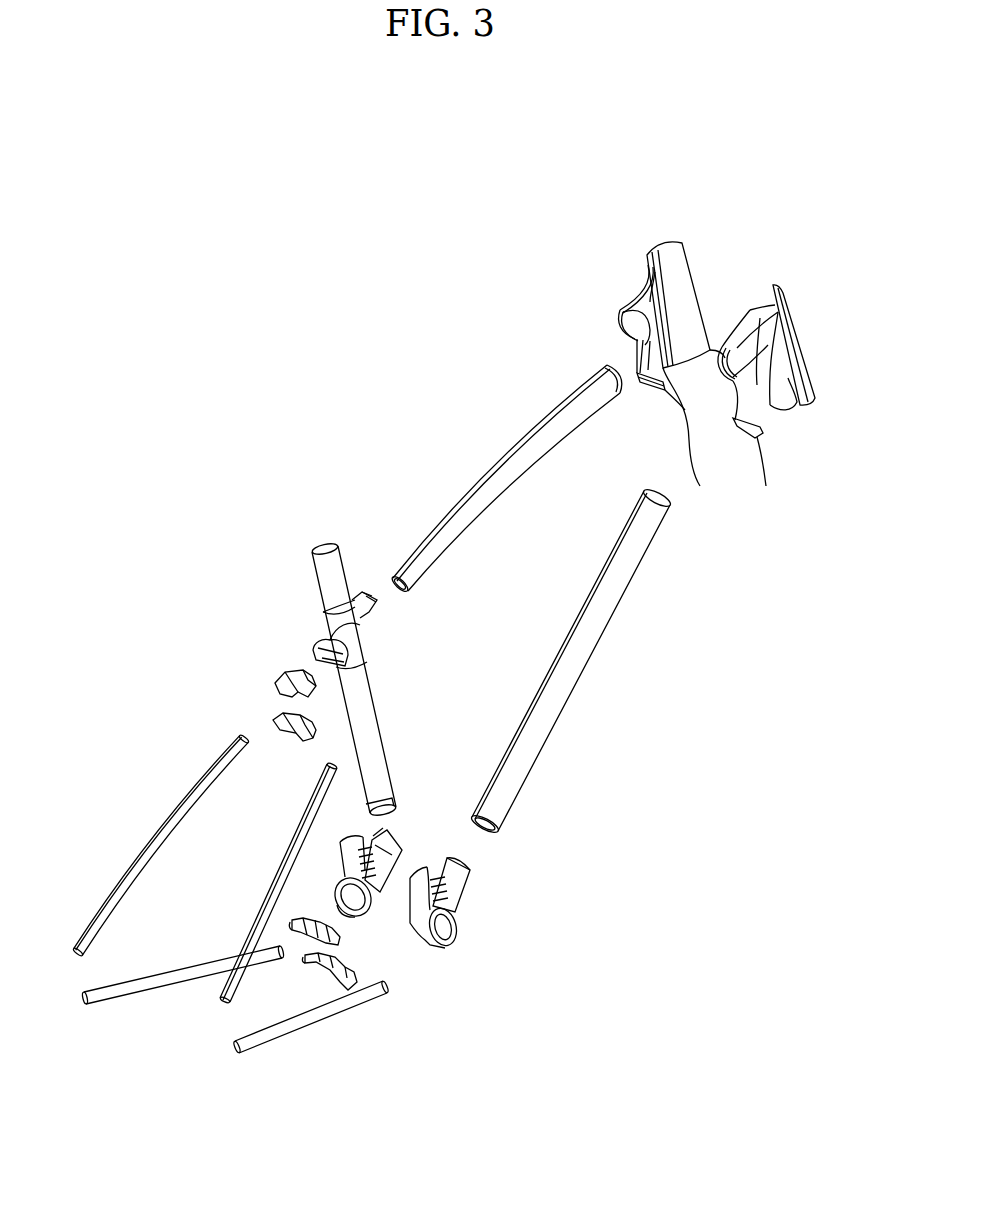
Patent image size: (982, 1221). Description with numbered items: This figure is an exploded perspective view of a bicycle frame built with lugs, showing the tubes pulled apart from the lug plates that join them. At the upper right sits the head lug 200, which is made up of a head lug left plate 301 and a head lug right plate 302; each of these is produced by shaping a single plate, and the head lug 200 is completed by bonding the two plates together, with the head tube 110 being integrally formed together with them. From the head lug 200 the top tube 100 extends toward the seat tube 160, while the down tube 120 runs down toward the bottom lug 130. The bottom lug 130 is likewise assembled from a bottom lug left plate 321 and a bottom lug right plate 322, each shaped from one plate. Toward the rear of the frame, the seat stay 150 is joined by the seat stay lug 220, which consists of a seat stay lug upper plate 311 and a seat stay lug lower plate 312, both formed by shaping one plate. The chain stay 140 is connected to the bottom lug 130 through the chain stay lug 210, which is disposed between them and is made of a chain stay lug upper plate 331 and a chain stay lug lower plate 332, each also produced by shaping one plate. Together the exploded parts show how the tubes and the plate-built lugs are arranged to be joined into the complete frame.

The top tube 100 is at (497, 470).
The head tube 110 is at (773, 290).
The down tube 120 is at (551, 735).
The bottom lug 130 is at (567, 843).
The chain stay 140 is at (157, 987).
The seat stay 150 is at (283, 853).
The seat tube 160 is at (373, 703).
The head lug 200 is at (792, 513).
The chain stay lug 210 is at (472, 977).
The seat stay lug 220 is at (277, 624).
The head lug left plate 301 is at (689, 460).
The head lug right plate 302 is at (763, 462).
The seat stay lug upper plate 311 is at (287, 670).
The seat stay lug lower plate 312 is at (283, 717).
The bottom lug left plate 321 is at (387, 853).
The bottom lug right plate 322 is at (453, 900).
The chain stay lug upper plate 331 is at (342, 937).
The chain stay lug lower plate 332 is at (340, 982).